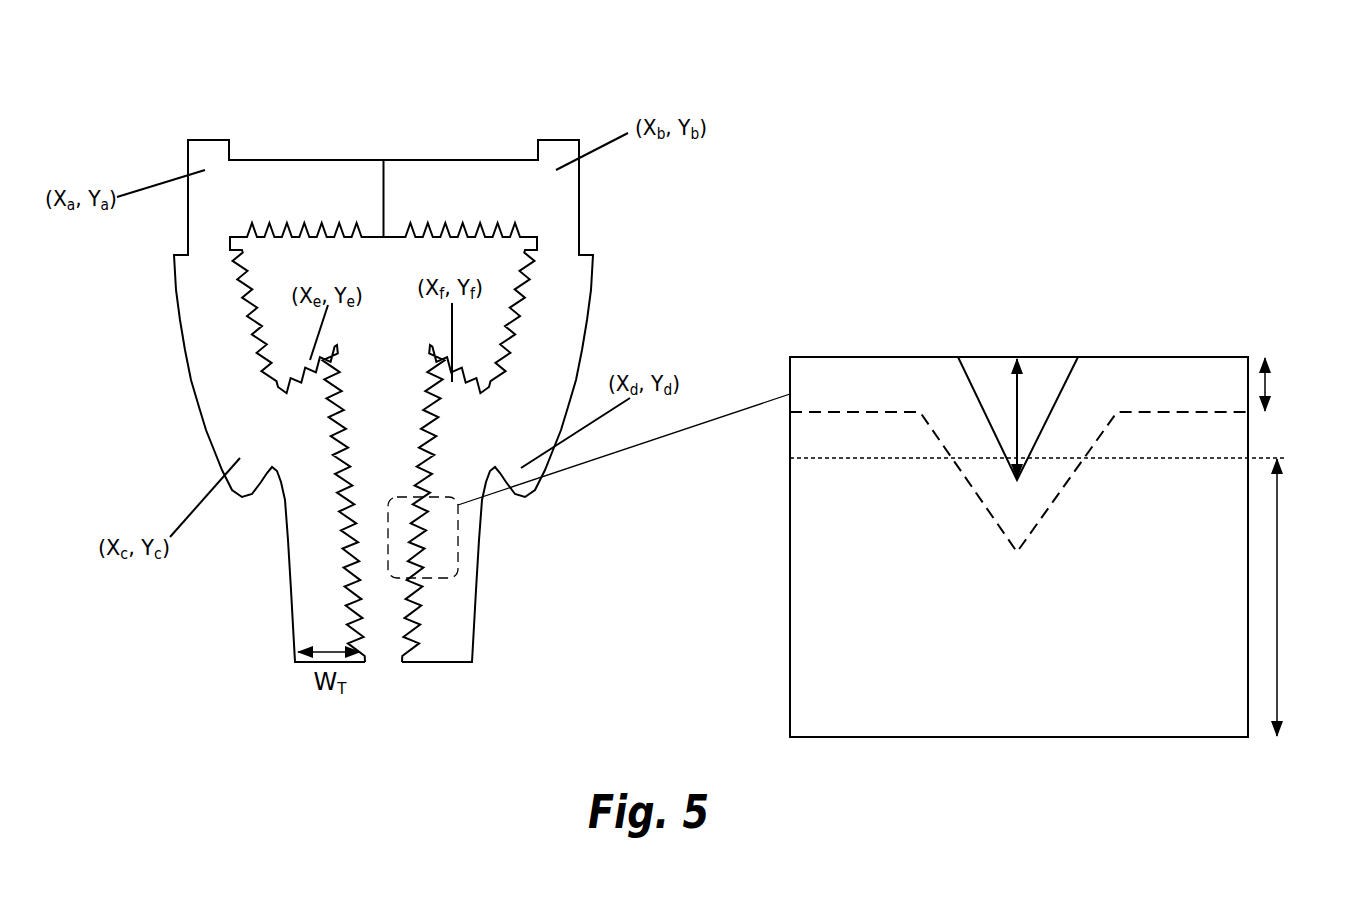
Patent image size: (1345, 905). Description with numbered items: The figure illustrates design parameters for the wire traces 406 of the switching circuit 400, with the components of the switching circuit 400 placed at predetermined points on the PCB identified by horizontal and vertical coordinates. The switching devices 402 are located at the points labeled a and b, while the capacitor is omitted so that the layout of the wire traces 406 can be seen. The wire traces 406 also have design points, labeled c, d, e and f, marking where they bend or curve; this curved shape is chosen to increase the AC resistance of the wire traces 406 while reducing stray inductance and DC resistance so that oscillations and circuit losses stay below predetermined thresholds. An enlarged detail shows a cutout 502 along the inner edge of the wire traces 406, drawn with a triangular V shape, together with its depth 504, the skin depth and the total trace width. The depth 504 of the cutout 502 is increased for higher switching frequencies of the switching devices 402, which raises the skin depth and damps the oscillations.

The switching circuit 400 is at (148, 110).
The switching devices 402 is at (208, 138).
The wire traces 406 is at (440, 468).
The cutout 502 is at (993, 302).
The depth 504 is at (1018, 388).